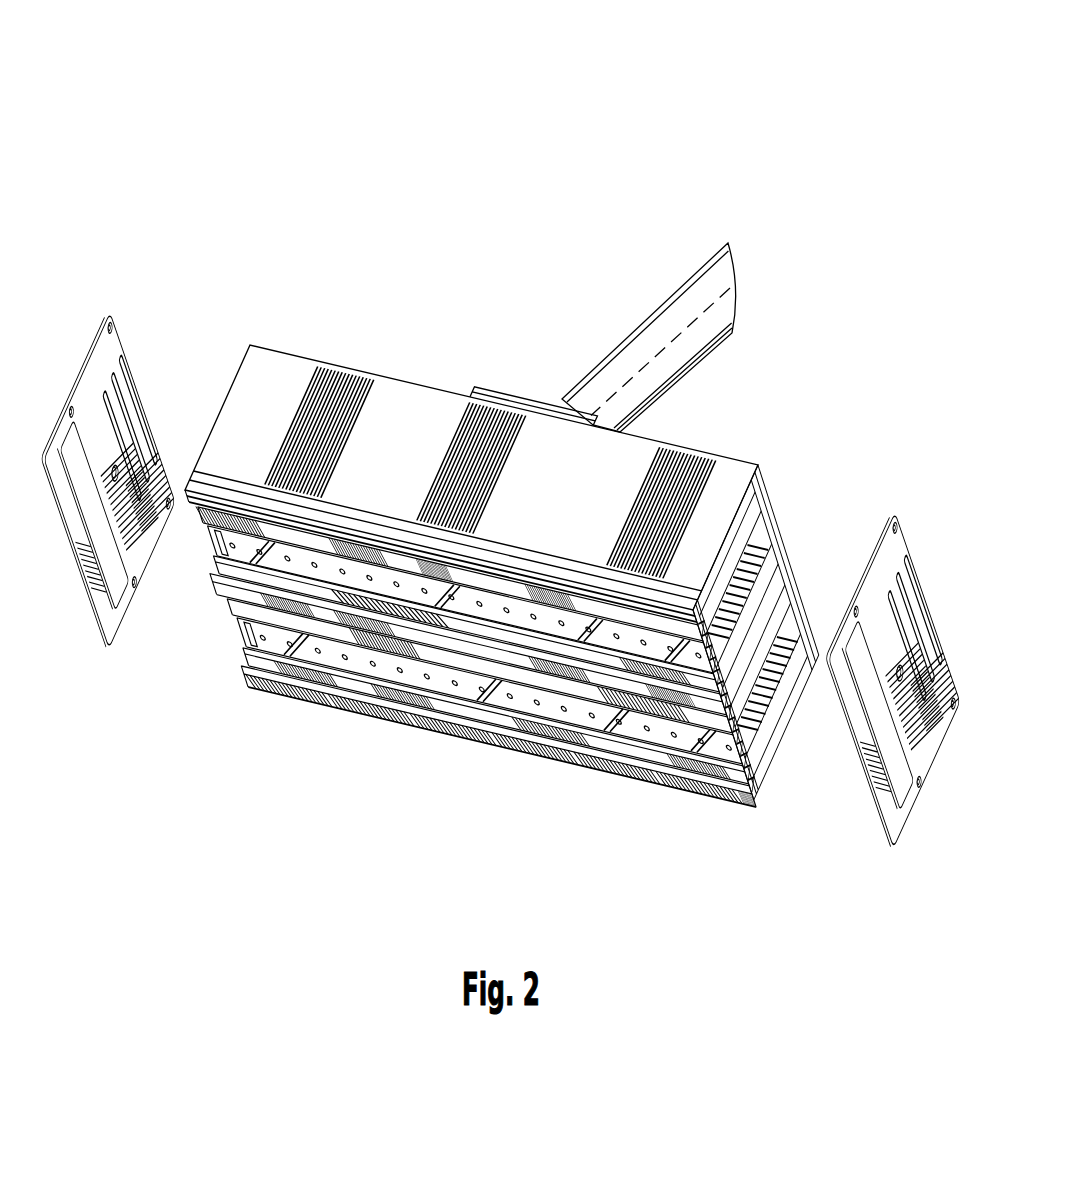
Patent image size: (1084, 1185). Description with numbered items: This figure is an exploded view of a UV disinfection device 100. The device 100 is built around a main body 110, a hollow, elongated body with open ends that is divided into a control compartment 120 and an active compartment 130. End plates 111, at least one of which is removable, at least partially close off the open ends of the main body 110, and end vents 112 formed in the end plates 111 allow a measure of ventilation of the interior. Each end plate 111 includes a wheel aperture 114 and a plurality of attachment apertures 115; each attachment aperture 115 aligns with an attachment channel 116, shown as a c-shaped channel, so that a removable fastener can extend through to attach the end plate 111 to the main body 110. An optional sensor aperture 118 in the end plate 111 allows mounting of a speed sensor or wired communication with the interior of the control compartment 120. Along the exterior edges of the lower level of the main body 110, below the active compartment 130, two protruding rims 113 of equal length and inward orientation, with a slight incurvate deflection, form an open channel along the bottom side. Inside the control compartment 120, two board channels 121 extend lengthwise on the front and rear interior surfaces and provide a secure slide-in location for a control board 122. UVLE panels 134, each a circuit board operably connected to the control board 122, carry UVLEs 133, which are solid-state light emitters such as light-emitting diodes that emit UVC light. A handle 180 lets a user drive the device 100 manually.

The UV disinfection device 100 is at (500, 485).
The main body 110 is at (404, 377).
The end plates 111 is at (893, 683).
The end vents 112 is at (908, 567).
The protruding rims 113 is at (757, 802).
The wheel aperture 114 is at (898, 677).
The attachment apertures 115 is at (894, 852).
The attachment channel 116 is at (752, 467).
The sensor aperture 118 is at (882, 572).
The control compartment 120 is at (767, 537).
The board channels 121 is at (723, 527).
The control board 122 is at (757, 627).
The active compartment 130 is at (712, 590).
The UVLE 133 is at (352, 658).
The UVLE panel 134 is at (415, 673).
The handle 180 is at (628, 337).